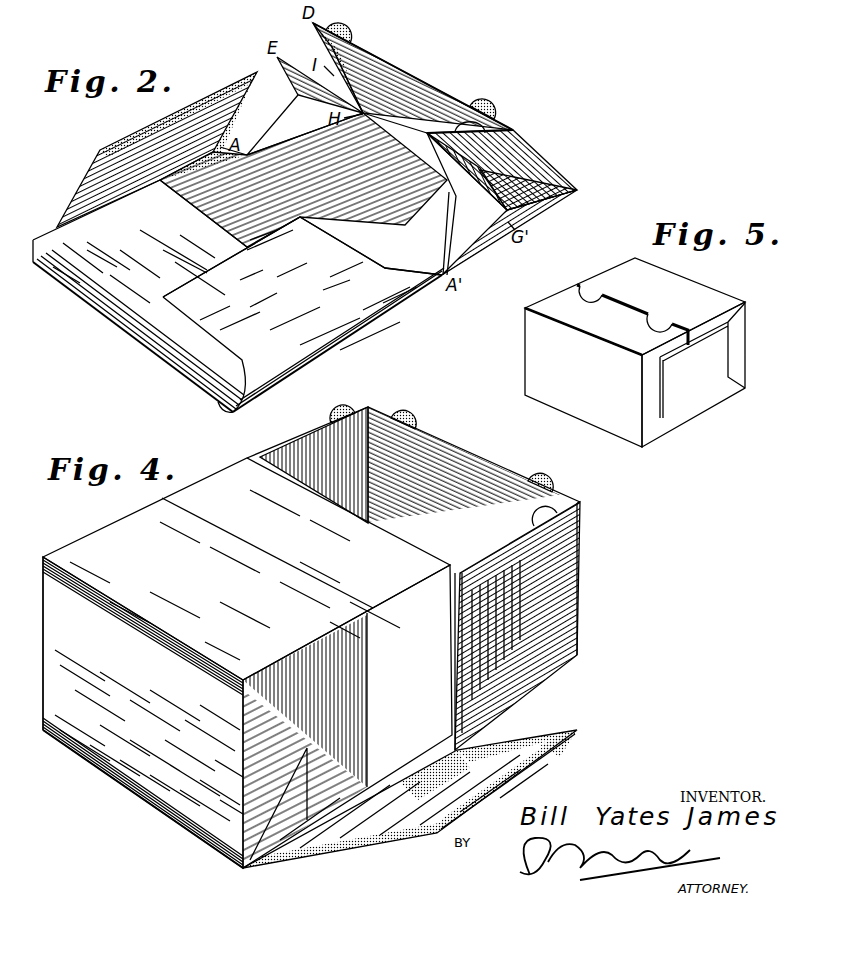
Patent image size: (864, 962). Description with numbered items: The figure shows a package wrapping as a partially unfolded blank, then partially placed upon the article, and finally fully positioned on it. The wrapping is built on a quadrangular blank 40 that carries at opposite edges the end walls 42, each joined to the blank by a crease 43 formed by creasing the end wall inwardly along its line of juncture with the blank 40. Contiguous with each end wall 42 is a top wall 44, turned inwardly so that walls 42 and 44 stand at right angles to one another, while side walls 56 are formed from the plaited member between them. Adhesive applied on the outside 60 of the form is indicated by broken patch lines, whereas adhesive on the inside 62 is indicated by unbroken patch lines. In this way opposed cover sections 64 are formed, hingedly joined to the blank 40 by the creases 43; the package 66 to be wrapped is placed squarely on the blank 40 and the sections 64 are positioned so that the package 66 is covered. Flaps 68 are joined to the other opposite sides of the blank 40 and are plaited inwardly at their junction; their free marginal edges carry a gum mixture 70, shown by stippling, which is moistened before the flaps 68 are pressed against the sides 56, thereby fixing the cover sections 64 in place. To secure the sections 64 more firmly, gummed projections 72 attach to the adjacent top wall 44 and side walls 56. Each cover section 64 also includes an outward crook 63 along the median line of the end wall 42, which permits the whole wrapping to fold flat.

In FIG. 2, the quadrangular blank 40 is at (230, 238).
In FIG. 2, the end wall 42 is at (303, 180).
In FIG. 2, the crease 43 is at (371, 246).
In FIG. 2, the top wall 44 is at (92, 327).
In FIG. 2, the side wall 56 is at (515, 157).
In FIG. 4, the side wall 56 is at (580, 541).
In FIG. 5, the side wall 56 is at (654, 396).
In FIG. 4, the outside of form 60 is at (540, 662).
In FIG. 2, the inside of form 62 is at (436, 93).
In FIG. 4, the inside of form 62 is at (488, 475).
In FIG. 2, the outward crook 63 is at (433, 186).
In FIG. 4, the outward crook 63 is at (163, 718).
In FIG. 2, the cover section 64 is at (322, 217).
In FIG. 4, the cover section 64 is at (70, 562).
In FIG. 5, the cover section 64 is at (540, 340).
In FIG. 4, the package 66 is at (347, 716).
In FIG. 2, the flap 68 is at (148, 150).
In FIG. 4, the flap 68 is at (505, 754).
In FIG. 5, the flap 68 is at (715, 354).
In FIG. 2, the gum mixture 70 is at (112, 150).
In FIG. 4, the gum mixture 70 is at (572, 732).
In FIG. 2, the projection 72 is at (351, 37).
In FIG. 4, the projection 72 is at (350, 411).
In FIG. 5, the projection 72 is at (596, 299).